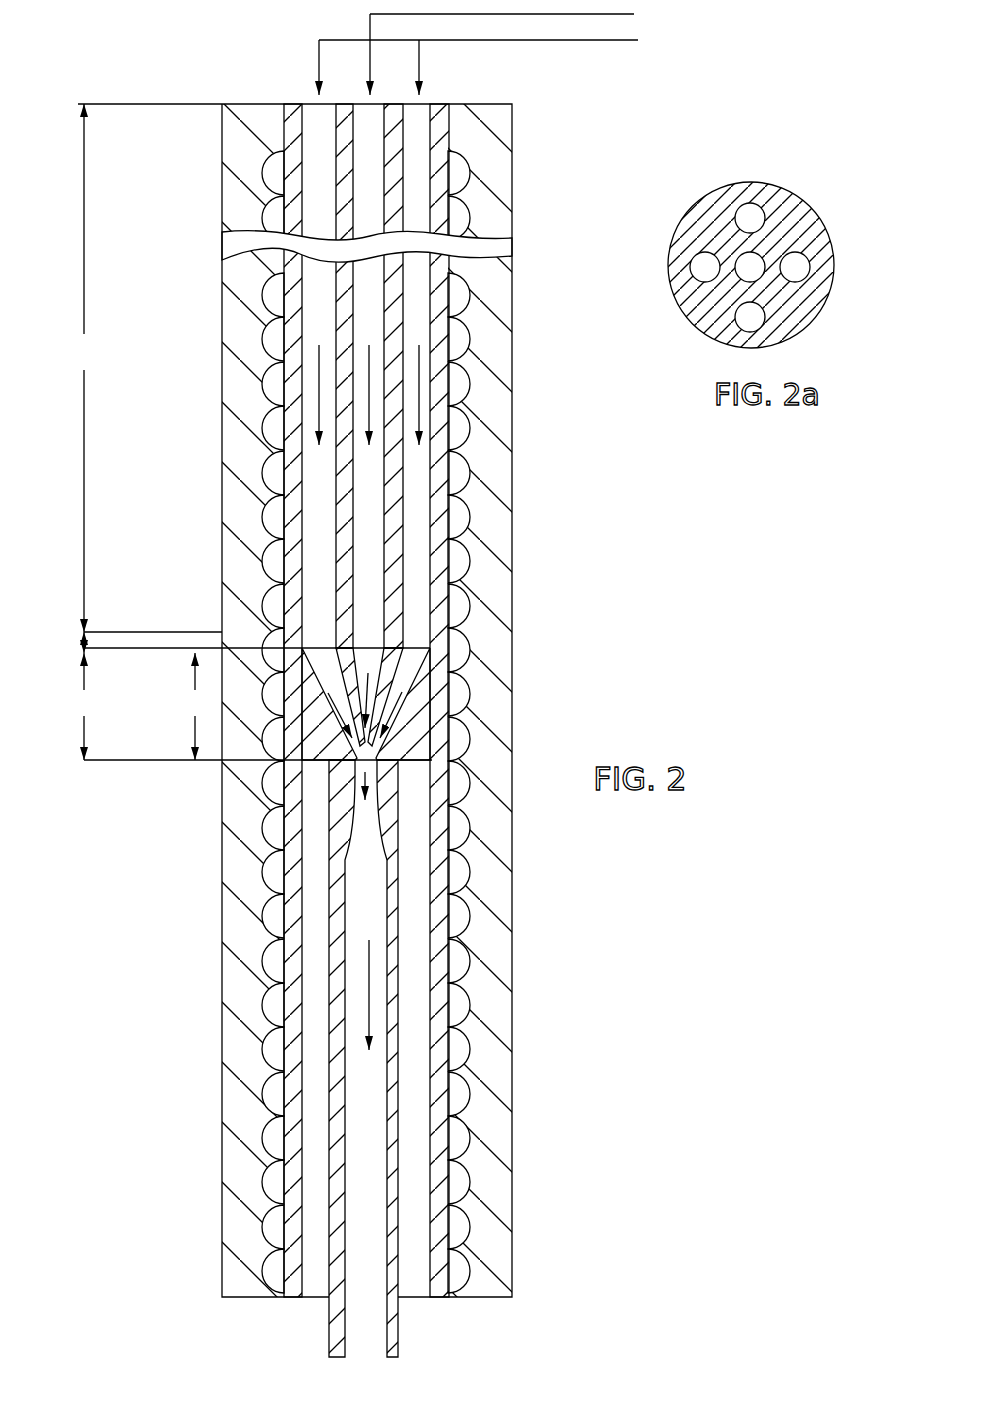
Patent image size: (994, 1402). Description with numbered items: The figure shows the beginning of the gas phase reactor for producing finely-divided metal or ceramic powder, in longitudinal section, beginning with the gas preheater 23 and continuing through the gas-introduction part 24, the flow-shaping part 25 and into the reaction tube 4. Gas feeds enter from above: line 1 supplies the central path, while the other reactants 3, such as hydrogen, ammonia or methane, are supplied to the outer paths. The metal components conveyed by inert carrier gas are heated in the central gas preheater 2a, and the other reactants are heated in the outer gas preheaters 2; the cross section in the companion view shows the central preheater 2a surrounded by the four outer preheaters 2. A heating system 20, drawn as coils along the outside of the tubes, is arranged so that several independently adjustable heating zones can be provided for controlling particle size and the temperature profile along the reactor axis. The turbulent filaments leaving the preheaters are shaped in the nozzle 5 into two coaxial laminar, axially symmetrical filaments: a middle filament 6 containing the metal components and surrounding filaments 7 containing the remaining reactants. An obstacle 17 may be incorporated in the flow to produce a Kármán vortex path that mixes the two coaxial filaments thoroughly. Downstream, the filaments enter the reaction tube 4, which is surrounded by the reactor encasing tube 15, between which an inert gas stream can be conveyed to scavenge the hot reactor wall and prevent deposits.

In FIG. 2, the first gas supply line 1 is at (634, 14).
In FIG. 2, the other reactants 3 is at (612, 40).
In FIG. 2a, the gas preheater 2 is at (797, 262).
In FIG. 2a, the gas preheater 2a is at (745, 262).
In FIG. 2, the reaction tube 4 is at (360, 893).
In FIG. 2, the nozzle 5 is at (195, 706).
In FIG. 2, the middle filament 6 is at (357, 772).
In FIG. 2, the surrounding filaments 7 is at (398, 722).
In FIG. 2, the reactor encasing tube 15 is at (440, 1102).
In FIG. 2, the obstacle 17 is at (378, 755).
In FIG. 2, the heating system 20 is at (468, 433).
In FIG. 2, the gas preheater 23 is at (84, 368).
In FIG. 2, the gas-introduction part 24 is at (76, 642).
In FIG. 2, the flow-shaping part 25 is at (85, 706).